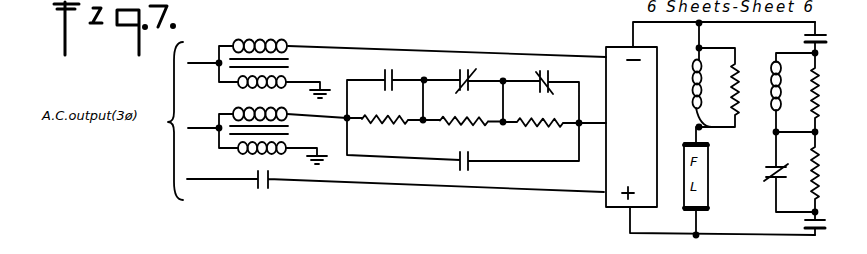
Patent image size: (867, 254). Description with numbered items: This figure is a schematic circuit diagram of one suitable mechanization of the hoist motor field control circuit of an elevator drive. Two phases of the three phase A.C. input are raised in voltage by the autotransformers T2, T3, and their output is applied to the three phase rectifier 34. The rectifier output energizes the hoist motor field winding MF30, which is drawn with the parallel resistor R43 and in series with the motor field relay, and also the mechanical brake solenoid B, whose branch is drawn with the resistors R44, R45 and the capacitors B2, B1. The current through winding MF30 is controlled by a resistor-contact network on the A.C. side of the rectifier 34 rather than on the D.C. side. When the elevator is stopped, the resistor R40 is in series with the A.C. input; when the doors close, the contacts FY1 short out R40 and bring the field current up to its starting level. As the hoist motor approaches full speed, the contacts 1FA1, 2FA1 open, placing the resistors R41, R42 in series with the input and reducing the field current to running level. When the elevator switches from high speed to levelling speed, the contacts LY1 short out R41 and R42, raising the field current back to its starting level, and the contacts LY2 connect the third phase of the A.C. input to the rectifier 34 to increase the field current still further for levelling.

The autotransformer T2 is at (291, 50).
The autotransformer T3 is at (240, 138).
The contacts FY1 is at (384, 70).
The contacts 1FA1 is at (458, 70).
The contacts 2FA1 is at (538, 73).
The resistor R40 is at (406, 126).
The resistor R41 is at (482, 126).
The resistor R42 is at (558, 128).
The contacts LY1 is at (464, 170).
The contacts LY2 is at (260, 189).
The three phase rectifier 34 is at (606, 209).
The resistor R43 is at (750, 44).
The hoist motor field winding MF30 is at (707, 130).
The capacitor B2 is at (819, 45).
The mechanical brake solenoid B is at (781, 89).
The resistor R44 is at (817, 102).
The resistor R45 is at (819, 166).
The capacitor B1 is at (826, 229).